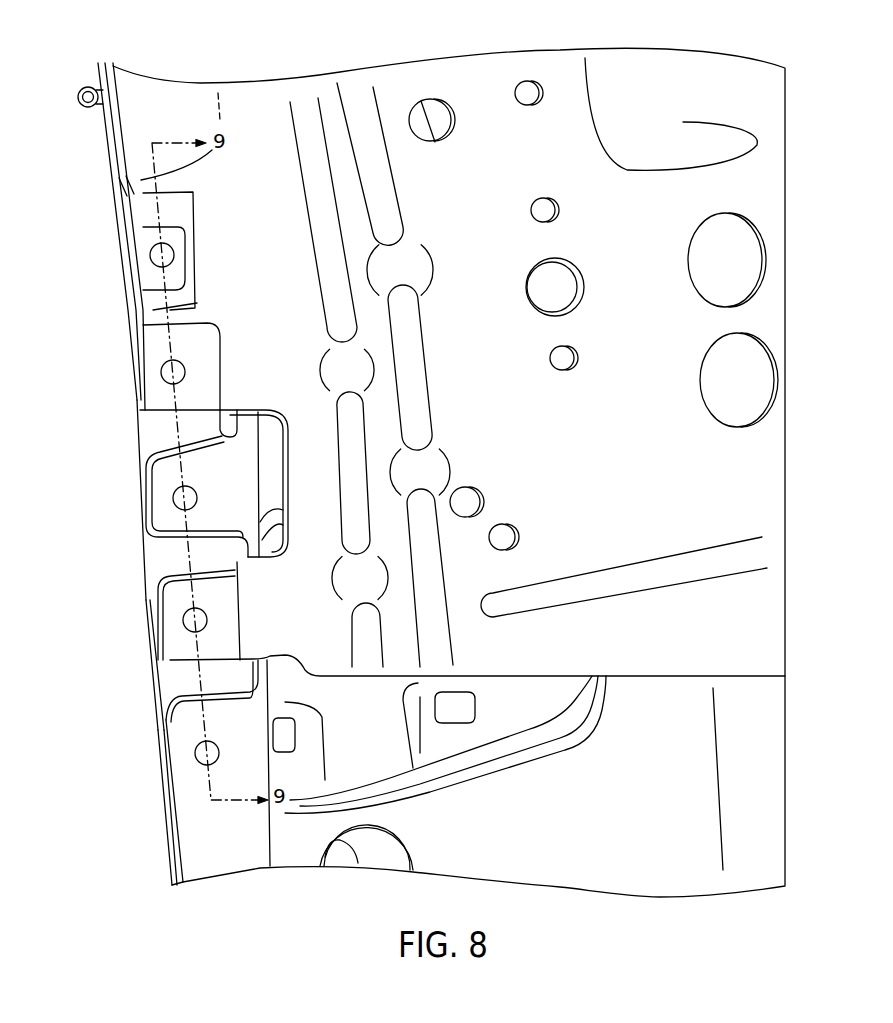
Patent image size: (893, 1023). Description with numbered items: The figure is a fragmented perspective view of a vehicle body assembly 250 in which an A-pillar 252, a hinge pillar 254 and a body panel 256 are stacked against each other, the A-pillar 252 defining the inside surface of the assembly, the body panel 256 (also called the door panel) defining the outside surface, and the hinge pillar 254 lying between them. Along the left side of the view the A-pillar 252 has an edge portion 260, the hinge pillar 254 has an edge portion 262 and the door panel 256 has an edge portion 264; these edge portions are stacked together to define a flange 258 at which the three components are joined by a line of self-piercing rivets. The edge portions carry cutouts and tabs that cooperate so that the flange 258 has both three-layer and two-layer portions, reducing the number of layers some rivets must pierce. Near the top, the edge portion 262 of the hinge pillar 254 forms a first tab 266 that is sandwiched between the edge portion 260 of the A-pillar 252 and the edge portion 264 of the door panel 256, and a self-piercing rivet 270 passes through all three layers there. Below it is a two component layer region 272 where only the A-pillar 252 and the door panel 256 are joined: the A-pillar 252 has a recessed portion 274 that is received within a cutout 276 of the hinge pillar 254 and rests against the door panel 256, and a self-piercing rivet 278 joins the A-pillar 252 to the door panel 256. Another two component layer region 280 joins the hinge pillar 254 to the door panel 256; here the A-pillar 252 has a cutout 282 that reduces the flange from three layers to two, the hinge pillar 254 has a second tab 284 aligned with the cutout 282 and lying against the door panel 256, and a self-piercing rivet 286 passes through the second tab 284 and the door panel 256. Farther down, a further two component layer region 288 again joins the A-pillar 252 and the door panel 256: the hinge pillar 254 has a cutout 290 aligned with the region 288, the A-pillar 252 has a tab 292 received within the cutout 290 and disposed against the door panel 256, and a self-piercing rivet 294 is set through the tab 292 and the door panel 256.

The vehicle body assembly 250 is at (76, 65).
The A-pillar 252 is at (770, 475).
The hinge pillar 254 is at (182, 728).
The body panel 256 is at (138, 443).
The flange 258 is at (192, 783).
The edge portion 260 is at (133, 150).
The edge portion 262 is at (195, 838).
The edge portion 264 is at (136, 423).
The first tab 266 is at (129, 228).
The self-piercing rivet 270 is at (177, 248).
The two component layer region 272 is at (132, 332).
The recessed portion 274 is at (152, 362).
The cutout 276 is at (188, 427).
The self-piercing rivet 278 is at (187, 363).
The two component layer region 280 is at (167, 467).
The cutout 282 is at (268, 437).
The second tab 284 is at (165, 517).
The self-piercing rivet 286 is at (197, 492).
The two component layer region 288 is at (167, 602).
The cutout 290 is at (211, 555).
The tab 292 is at (170, 650).
The self-piercing rivet 294 is at (208, 622).